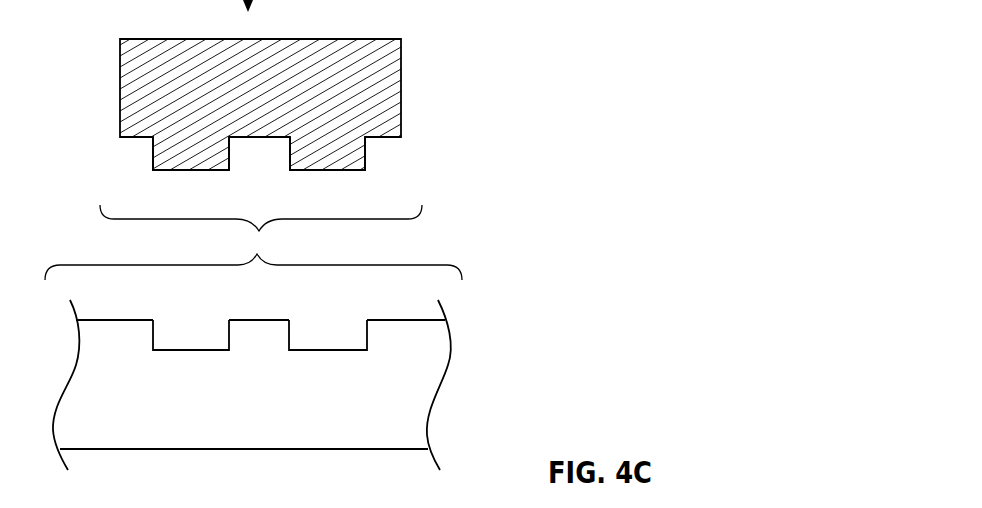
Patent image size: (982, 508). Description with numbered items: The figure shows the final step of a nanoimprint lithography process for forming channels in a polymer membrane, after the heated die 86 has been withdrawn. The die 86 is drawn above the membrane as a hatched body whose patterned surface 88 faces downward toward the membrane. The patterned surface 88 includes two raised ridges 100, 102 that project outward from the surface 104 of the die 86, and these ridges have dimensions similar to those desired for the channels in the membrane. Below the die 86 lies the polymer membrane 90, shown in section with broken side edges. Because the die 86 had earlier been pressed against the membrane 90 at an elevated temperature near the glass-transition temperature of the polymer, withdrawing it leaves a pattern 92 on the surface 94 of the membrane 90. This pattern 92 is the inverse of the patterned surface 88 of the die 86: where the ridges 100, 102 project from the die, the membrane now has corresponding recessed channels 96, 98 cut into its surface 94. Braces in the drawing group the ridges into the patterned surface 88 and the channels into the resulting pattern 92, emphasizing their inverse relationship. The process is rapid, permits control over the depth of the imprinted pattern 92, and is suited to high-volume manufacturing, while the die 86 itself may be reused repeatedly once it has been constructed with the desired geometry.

The heated die 86 is at (324, 37).
The patterned surface 88 is at (259, 231).
The polymer membrane 90 is at (298, 451).
The pattern 92 is at (257, 254).
The surface of the membrane 94 is at (369, 319).
The channel 96 is at (190, 350).
The channel 98 is at (329, 350).
The raised ridge 100 is at (193, 171).
The raised ridge 102 is at (327, 171).
The surface of the die 104 is at (142, 140).